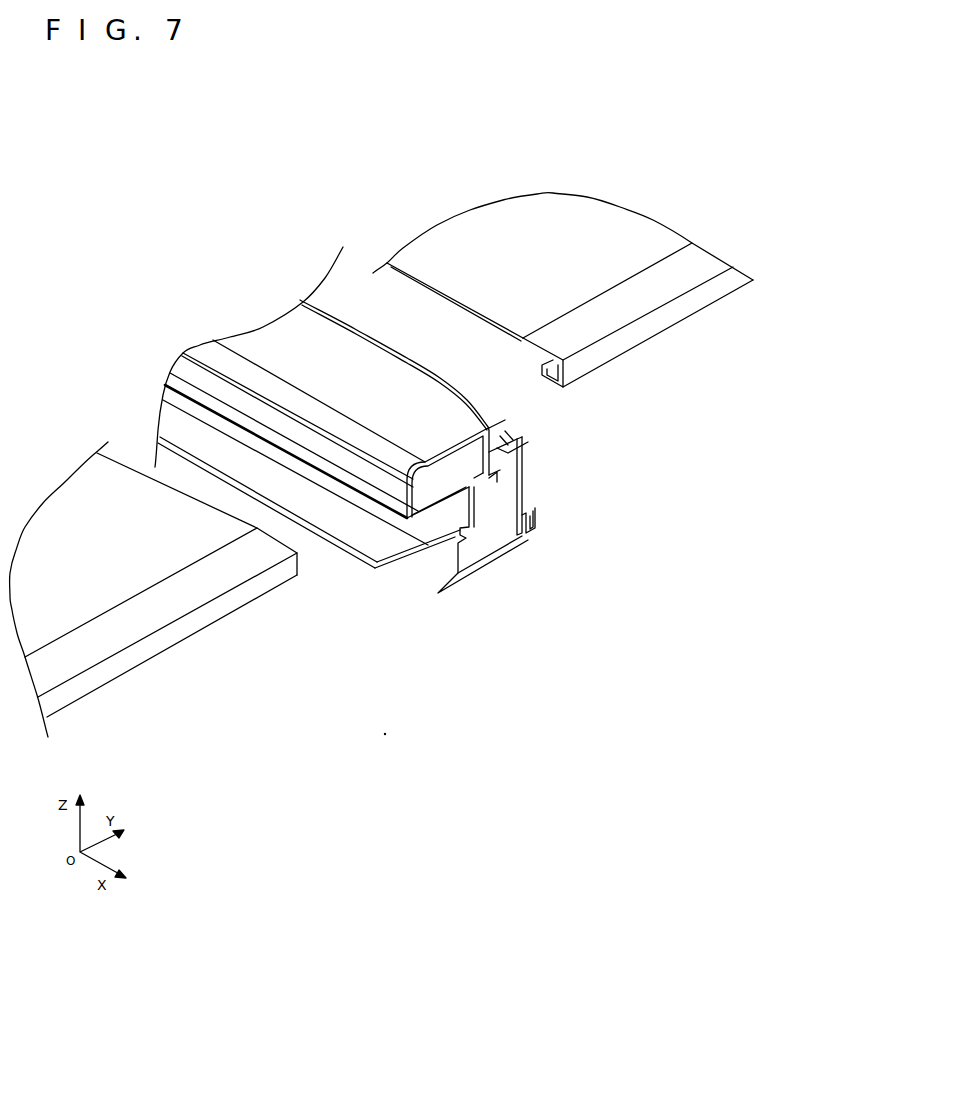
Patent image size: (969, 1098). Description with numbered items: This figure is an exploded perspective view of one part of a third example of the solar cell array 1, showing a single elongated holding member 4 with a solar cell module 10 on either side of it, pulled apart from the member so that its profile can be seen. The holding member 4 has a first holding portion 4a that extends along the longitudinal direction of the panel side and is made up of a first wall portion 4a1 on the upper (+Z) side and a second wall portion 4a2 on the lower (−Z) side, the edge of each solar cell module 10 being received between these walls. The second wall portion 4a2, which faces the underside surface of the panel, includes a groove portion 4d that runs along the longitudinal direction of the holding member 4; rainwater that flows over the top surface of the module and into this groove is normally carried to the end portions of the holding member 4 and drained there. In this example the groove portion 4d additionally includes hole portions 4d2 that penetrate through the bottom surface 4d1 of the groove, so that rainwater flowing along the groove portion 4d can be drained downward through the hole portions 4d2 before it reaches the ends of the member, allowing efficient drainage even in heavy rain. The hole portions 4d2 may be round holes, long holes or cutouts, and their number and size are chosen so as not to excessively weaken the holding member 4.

The solar cell array 1 is at (545, 668).
The holding member 4 is at (482, 578).
The first holding portion 4a is at (502, 430).
The first wall portion 4a1 is at (495, 423).
The second wall portion 4a2 is at (530, 450).
The groove portion 4d is at (522, 463).
The bottom surface 4d1 is at (513, 470).
The hole portions 4d2 is at (492, 473).
The solar cell module 10 is at (647, 349).